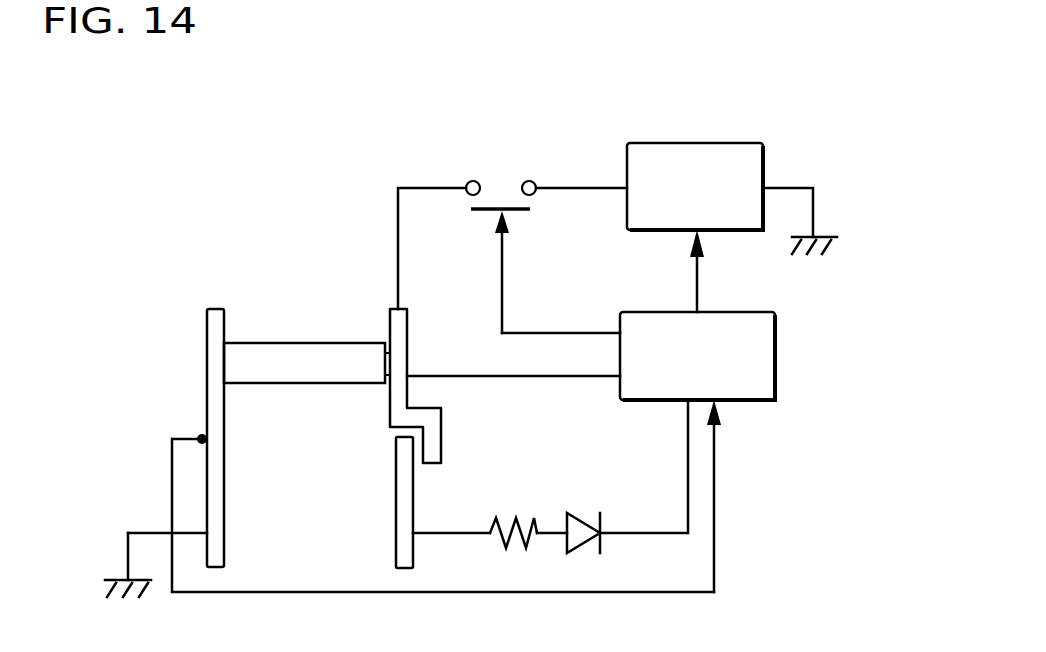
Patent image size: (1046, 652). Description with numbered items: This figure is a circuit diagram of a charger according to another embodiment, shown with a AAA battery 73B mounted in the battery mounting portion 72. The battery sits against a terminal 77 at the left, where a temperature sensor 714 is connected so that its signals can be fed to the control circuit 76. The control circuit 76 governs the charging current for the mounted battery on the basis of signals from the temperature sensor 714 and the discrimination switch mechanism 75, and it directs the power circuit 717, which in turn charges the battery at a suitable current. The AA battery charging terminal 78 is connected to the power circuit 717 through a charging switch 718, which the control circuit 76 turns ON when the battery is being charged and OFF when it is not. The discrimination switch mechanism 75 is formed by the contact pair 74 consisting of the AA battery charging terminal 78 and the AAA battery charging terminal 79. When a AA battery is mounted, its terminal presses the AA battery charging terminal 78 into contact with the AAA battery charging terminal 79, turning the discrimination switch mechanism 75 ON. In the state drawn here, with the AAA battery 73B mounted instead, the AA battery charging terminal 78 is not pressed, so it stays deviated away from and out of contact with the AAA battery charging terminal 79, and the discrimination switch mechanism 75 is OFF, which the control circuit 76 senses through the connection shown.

The battery mounting portion 72 is at (307, 358).
The AAA battery 73B is at (300, 370).
The discrimination switch contacts 74 is at (476, 438).
The discrimination switch mechanism 75 is at (433, 438).
The control circuit 76 is at (775, 332).
The battery terminal 77 is at (215, 342).
The AA battery charging terminal 78 is at (403, 512).
The AAA battery charging terminal 79 is at (398, 397).
The temperature sensor 714 is at (202, 439).
The power circuit 717 is at (710, 148).
The charging switch 718 is at (497, 185).